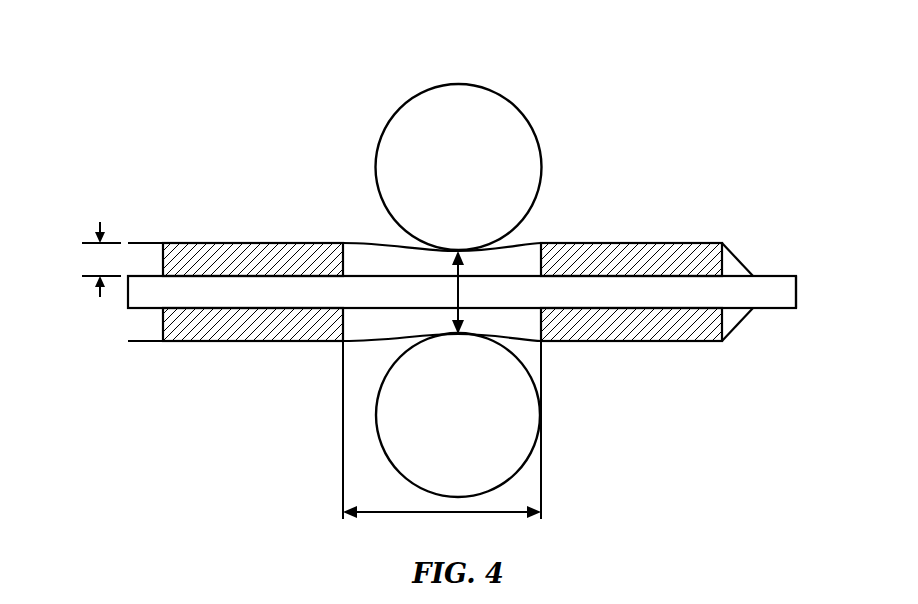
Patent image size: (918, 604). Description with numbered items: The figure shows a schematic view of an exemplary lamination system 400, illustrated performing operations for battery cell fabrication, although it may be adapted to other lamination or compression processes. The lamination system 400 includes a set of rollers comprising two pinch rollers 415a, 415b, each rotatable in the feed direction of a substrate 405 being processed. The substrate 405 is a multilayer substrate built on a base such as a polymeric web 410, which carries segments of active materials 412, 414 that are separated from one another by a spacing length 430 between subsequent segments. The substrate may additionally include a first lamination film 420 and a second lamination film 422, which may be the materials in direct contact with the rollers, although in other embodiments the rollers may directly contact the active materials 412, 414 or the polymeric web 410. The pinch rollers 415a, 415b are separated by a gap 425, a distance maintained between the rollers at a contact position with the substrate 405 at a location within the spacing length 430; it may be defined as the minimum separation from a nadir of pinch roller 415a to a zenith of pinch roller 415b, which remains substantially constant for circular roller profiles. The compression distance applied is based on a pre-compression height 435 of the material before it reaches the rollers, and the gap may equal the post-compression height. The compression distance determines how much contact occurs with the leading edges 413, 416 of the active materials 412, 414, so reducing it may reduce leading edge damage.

The lamination system 400 is at (120, 72).
The substrate 405 is at (773, 275).
The polymeric web 410 is at (796, 290).
The active material 412 is at (193, 242).
The leading edge 413 is at (337, 258).
The active material 414 is at (205, 343).
The pinch roller 415a is at (535, 133).
The pinch roller 415b is at (535, 448).
The leading edge 416 is at (320, 345).
The first lamination film 420 is at (732, 243).
The second lamination film 422 is at (740, 330).
The gap 425 is at (460, 290).
The spacing length 430 is at (512, 510).
The pre-compression height 435 is at (100, 222).